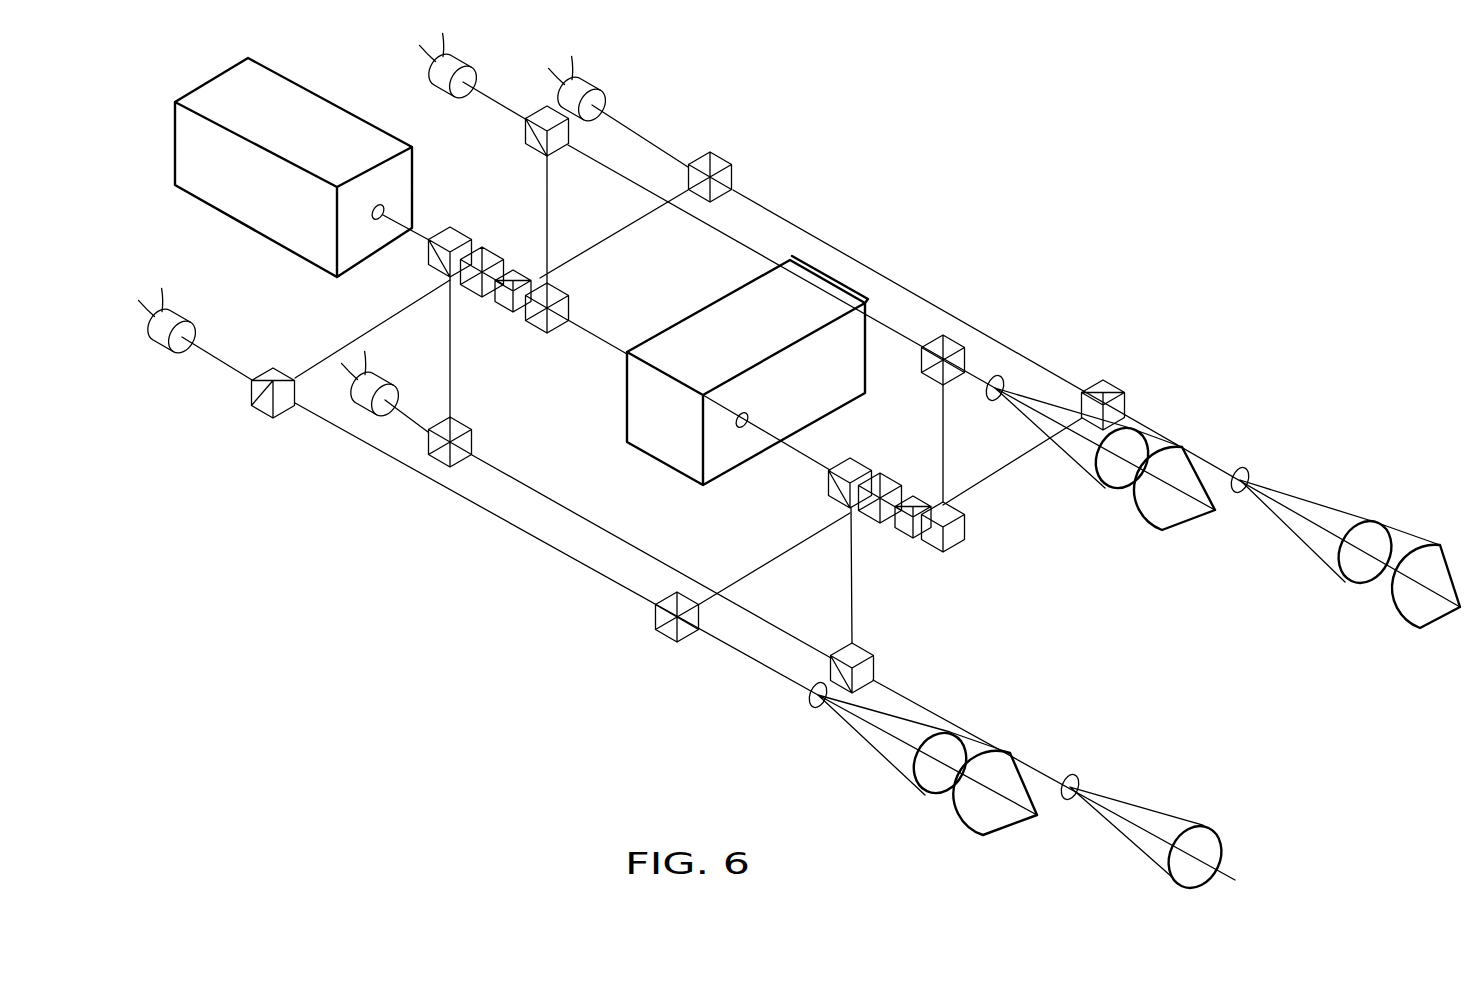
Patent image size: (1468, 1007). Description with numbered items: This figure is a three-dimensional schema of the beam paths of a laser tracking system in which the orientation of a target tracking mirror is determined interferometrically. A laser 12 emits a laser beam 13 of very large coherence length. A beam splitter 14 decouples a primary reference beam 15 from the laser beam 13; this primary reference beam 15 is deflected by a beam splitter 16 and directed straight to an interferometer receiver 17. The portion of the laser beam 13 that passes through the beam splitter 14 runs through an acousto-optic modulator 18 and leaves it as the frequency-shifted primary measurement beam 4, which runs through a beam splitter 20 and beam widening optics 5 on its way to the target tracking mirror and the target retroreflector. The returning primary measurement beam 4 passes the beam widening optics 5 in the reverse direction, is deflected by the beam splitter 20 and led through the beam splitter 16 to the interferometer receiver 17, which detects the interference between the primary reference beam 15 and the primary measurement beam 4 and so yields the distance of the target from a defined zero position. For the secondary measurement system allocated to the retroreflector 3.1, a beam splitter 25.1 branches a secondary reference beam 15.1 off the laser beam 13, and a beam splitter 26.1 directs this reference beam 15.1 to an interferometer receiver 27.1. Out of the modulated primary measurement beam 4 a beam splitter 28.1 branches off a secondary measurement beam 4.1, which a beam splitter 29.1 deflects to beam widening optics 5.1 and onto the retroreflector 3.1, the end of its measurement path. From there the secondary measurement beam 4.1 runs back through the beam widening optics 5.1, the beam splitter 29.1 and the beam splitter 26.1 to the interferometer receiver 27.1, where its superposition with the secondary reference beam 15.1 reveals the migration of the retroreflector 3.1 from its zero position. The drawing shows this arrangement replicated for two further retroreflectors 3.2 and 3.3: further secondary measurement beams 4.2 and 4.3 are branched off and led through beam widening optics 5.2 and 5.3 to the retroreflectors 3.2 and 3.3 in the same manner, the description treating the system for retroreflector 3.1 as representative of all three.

The laser 12 is at (248, 195).
The laser beam 13 is at (417, 235).
The beam splitter 14 is at (429, 263).
The beam splitter 25.1 is at (490, 253).
The reference beam 15.1 is at (320, 362).
The primary reference beam 15 is at (450, 370).
The beam splitter 16 is at (470, 443).
The interferometer receiver 17 is at (373, 377).
The interferometer receiver 27.1 is at (165, 342).
The beam splitter 26.1 is at (255, 418).
The beam splitter 29.1 is at (663, 630).
The acousto-optic modulator 18 is at (660, 432).
The primary measurement beam 4 is at (803, 458).
The beam splitter 20 is at (852, 467).
The beam splitter 28.1 is at (877, 508).
The secondary measurement beam 4.1 is at (740, 580).
The partial measuring beam 4.2 is at (930, 307).
The partial measuring beam 4.3 is at (882, 318).
The beam expander / pinhole optics 5.3 is at (1061, 394).
The beam expander / pinhole optics 5.2 is at (1325, 490).
The beam widening optics 5.1 is at (856, 747).
The beam widening optics 5 is at (1136, 794).
The focusing lens 3.3 is at (1175, 510).
The focusing lens 3.2 is at (1430, 612).
The retroreflector 3.1 is at (1007, 820).